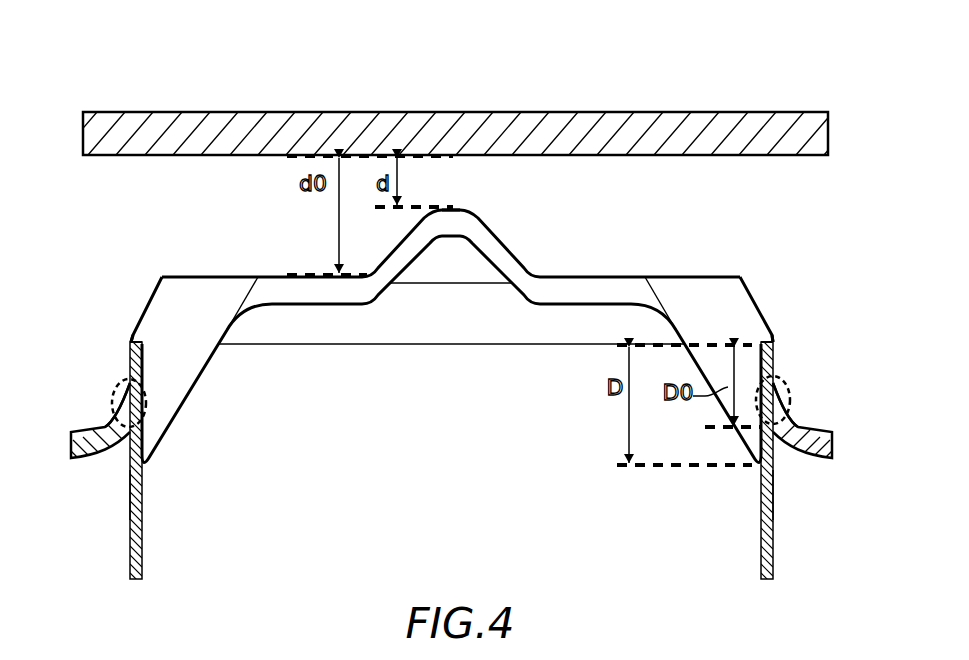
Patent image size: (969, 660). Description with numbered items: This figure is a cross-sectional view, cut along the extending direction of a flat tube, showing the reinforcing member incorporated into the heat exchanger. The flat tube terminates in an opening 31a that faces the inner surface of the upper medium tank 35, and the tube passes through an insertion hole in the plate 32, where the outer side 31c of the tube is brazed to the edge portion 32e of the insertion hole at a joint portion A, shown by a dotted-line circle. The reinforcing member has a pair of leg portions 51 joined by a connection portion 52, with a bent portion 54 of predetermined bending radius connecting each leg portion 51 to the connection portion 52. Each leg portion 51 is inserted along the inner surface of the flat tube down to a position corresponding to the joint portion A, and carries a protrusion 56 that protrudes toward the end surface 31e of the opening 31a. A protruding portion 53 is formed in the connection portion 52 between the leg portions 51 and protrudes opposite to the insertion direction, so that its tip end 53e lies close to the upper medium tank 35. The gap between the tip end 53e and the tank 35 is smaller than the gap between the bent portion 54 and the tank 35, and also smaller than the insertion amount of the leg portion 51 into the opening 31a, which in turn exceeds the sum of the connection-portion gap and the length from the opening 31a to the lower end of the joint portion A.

The upper medium tank 35 is at (655, 125).
The leg portion 51 is at (180, 405).
The connection portion 52 is at (272, 276).
The protruding portion 53 is at (483, 232).
The tip end of the protruding portion 53e is at (463, 212).
The bent portion 54 is at (190, 286).
The protrusion 56 is at (133, 334).
The opening of the flat tube 31a is at (130, 353).
The end surface of the opening 31e is at (130, 338).
The outer side of the flat tube 31c is at (130, 460).
The plate 32 is at (835, 436).
The edge portion of the insertion hole 32e is at (122, 408).
The joint portion A is at (112, 398).